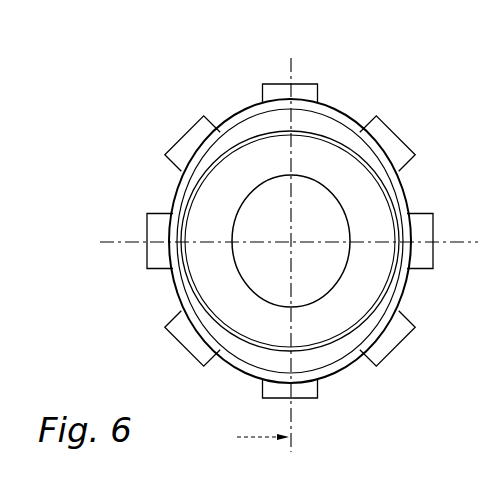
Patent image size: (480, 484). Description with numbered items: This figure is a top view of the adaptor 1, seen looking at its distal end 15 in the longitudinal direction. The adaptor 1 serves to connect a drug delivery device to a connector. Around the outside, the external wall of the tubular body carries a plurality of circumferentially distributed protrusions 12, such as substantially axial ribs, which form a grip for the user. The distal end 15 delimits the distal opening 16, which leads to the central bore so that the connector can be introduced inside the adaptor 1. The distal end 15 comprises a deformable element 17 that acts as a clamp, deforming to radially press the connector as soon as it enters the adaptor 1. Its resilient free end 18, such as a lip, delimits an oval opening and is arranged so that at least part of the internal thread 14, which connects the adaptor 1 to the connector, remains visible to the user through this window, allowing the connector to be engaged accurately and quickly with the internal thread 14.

The adaptor 1 is at (215, 80).
The protrusions 12 is at (392, 130).
The internal thread 14 is at (200, 222).
The distal end 15 is at (403, 188).
The distal opening 16 is at (260, 267).
The deformable element 17 is at (305, 122).
The free end 18 is at (248, 140).